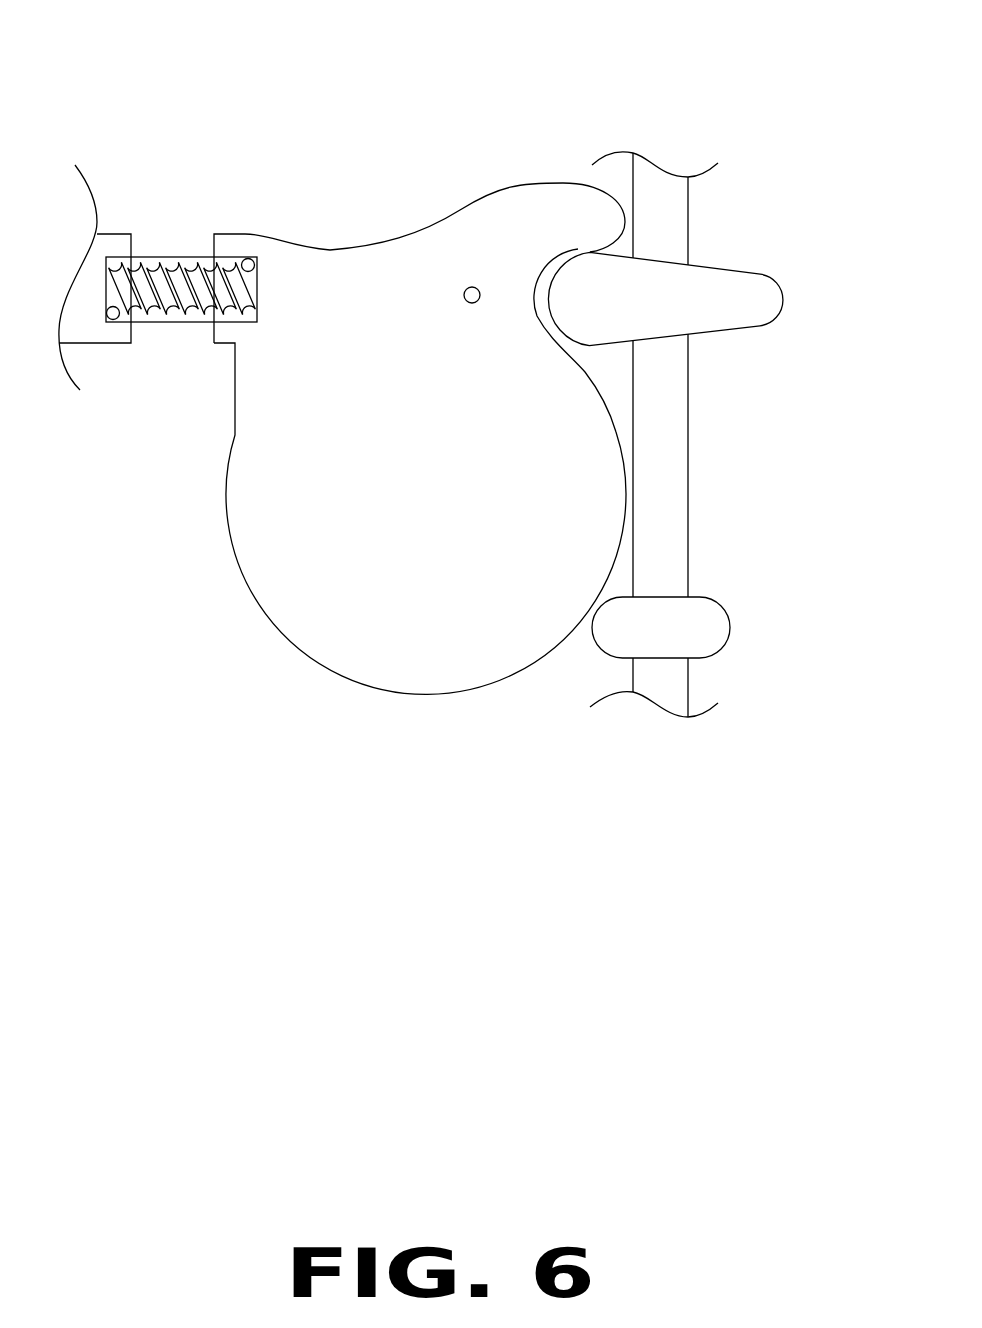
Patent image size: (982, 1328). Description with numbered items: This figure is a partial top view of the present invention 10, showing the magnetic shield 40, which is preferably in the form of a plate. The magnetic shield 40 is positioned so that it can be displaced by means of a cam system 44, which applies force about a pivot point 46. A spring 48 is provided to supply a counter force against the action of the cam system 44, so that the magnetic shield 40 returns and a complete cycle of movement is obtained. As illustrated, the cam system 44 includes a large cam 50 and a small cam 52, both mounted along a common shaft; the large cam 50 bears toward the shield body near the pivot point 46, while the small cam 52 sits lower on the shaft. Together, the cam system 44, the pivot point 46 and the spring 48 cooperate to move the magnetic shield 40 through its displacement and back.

The present invention 10 is at (680, 363).
The magnetic shield 40 is at (297, 595).
The cam system 44 is at (680, 400).
The pivot point 46 is at (466, 291).
The spring 48 is at (160, 258).
The large cam 50 is at (727, 318).
The small cam 52 is at (717, 610).